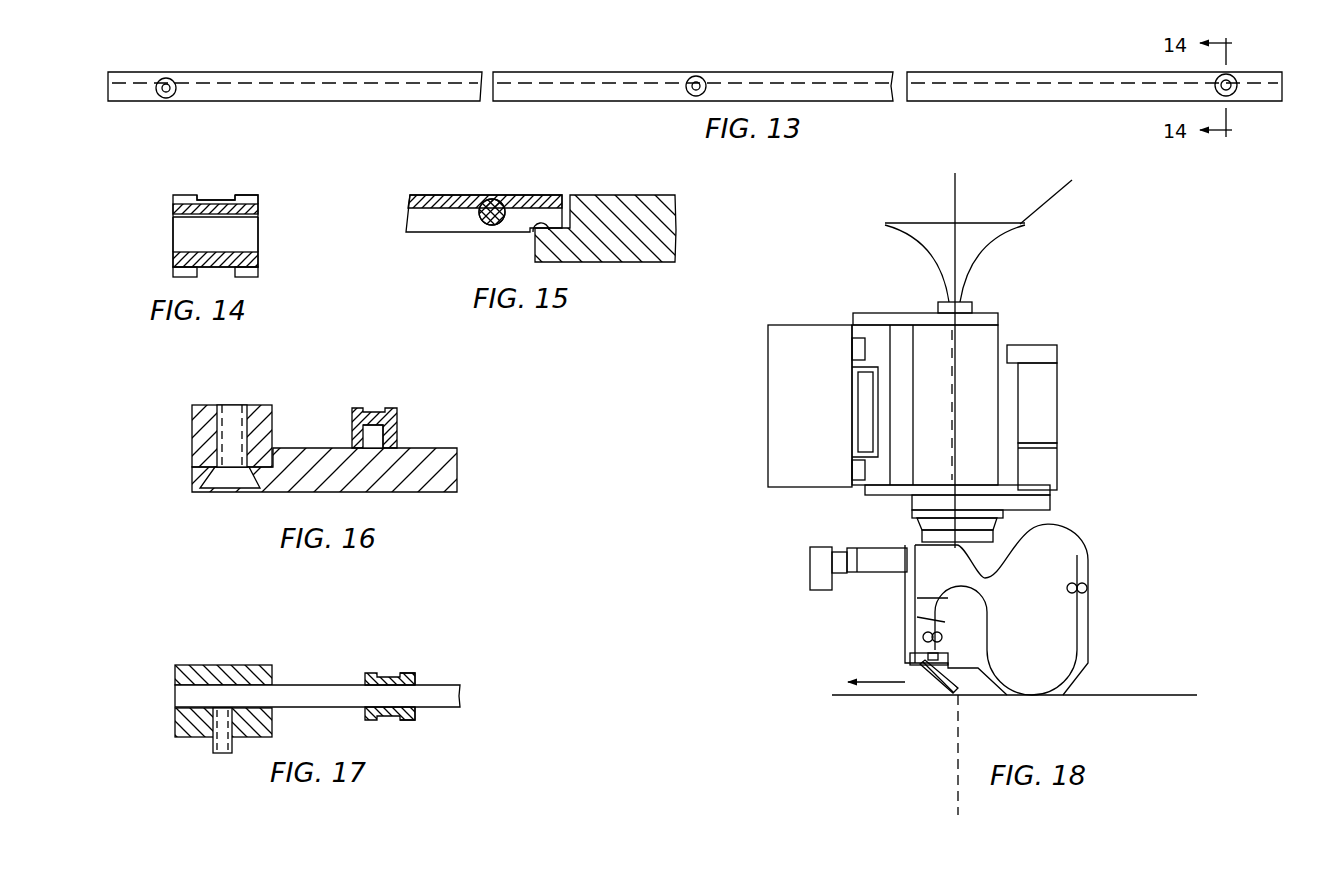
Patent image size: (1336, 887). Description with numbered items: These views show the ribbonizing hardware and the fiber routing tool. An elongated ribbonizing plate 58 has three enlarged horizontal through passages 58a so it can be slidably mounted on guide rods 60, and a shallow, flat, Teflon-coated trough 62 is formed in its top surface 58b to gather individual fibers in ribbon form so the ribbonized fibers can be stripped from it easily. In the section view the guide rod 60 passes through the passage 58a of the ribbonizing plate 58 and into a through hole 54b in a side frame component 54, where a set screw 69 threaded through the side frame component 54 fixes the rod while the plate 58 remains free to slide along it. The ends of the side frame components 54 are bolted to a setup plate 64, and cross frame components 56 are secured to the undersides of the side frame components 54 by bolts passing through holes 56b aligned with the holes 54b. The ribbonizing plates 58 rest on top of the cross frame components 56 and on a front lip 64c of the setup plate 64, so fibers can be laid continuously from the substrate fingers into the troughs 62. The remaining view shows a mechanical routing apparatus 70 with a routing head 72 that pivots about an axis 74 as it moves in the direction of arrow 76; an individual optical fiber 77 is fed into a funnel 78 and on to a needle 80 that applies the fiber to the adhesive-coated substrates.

In FIG. 13, the ribbonizing plate 58 is at (868, 82).
In FIG. 14, the ribbonizing plate 58 is at (256, 262).
In FIG. 15, the ribbonizing plate 58 is at (420, 197).
In FIG. 16, the ribbonizing plate 58 is at (392, 434).
In FIG. 17, the ribbonizing plate 58 is at (405, 673).
In FIG. 13, the through passage 58a is at (175, 82).
In FIG. 14, the through passage 58a is at (200, 208).
In FIG. 14, the top surface 58b is at (245, 197).
In FIG. 15, the guide rod 60 is at (498, 204).
In FIG. 17, the guide rod 60 is at (295, 690).
In FIG. 14, the trough 62 is at (214, 197).
In FIG. 16, the trough 62 is at (382, 412).
In FIG. 17, the trough 62 is at (385, 675).
In FIG. 15, the setup plate 64 is at (665, 198).
In FIG. 15, the front lip 64c is at (535, 222).
In FIG. 16, the side frame component 54 is at (210, 436).
In FIG. 17, the side frame component 54 is at (220, 668).
In FIG. 16, the through hole 54b is at (228, 420).
In FIG. 16, the cross frame component 56 is at (450, 473).
In FIG. 16, the hole 56b is at (218, 490).
In FIG. 17, the set screw 69 is at (215, 741).
In FIG. 18, the mechanical routing apparatus 70 is at (1080, 505).
In FIG. 18, the routing head 72 is at (1085, 642).
In FIG. 18, the axis 74 is at (962, 732).
In FIG. 18, the arrow 76 is at (878, 686).
In FIG. 18, the optical fiber 77 is at (1048, 198).
In FIG. 18, the funnel 78 is at (925, 238).
In FIG. 18, the needle 80 is at (938, 687).